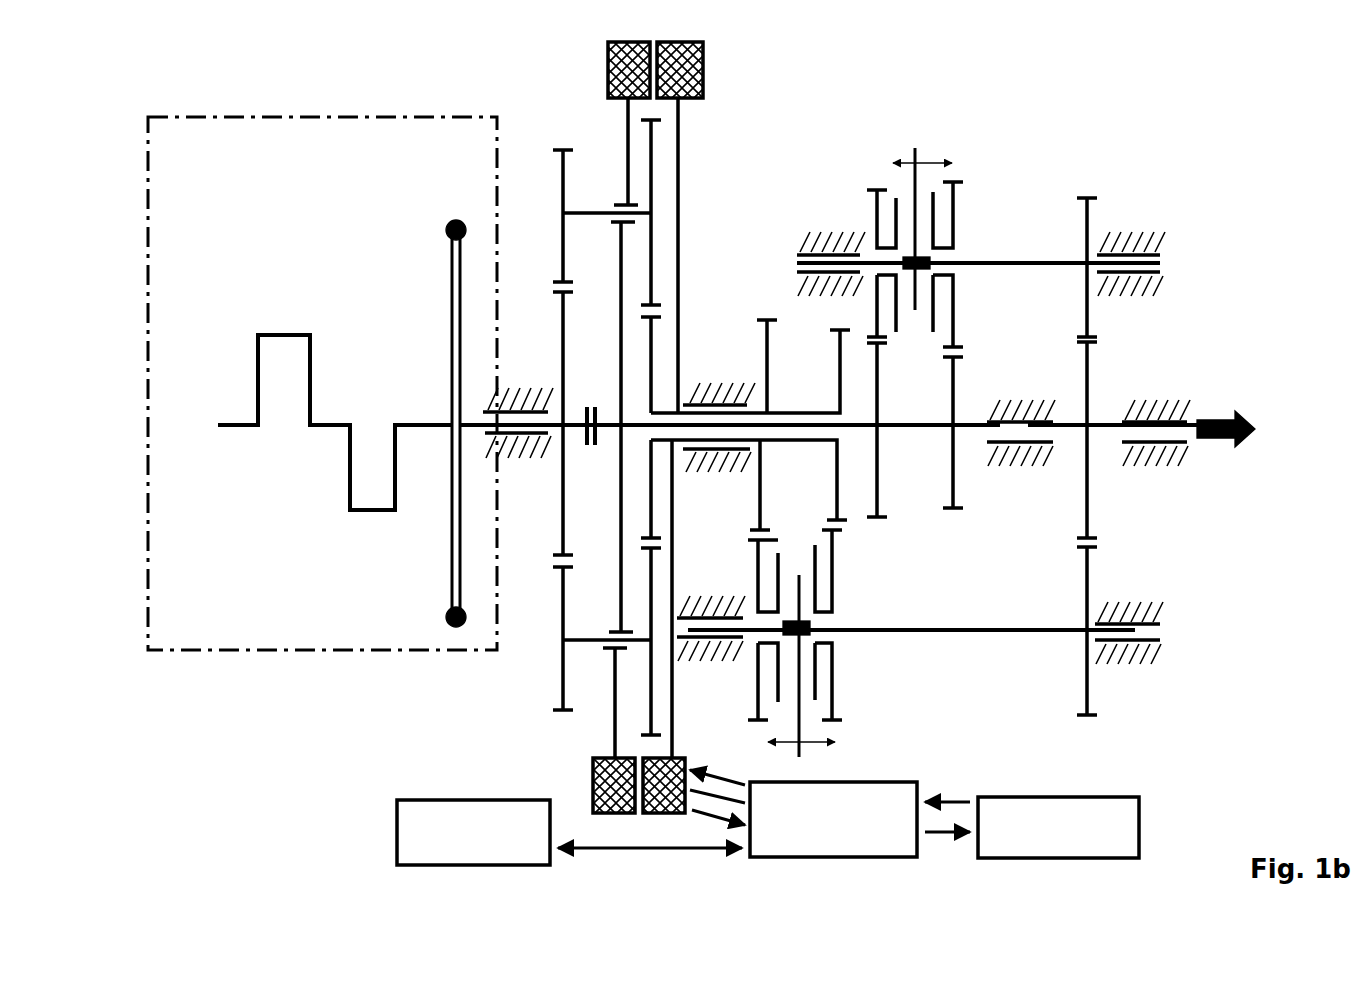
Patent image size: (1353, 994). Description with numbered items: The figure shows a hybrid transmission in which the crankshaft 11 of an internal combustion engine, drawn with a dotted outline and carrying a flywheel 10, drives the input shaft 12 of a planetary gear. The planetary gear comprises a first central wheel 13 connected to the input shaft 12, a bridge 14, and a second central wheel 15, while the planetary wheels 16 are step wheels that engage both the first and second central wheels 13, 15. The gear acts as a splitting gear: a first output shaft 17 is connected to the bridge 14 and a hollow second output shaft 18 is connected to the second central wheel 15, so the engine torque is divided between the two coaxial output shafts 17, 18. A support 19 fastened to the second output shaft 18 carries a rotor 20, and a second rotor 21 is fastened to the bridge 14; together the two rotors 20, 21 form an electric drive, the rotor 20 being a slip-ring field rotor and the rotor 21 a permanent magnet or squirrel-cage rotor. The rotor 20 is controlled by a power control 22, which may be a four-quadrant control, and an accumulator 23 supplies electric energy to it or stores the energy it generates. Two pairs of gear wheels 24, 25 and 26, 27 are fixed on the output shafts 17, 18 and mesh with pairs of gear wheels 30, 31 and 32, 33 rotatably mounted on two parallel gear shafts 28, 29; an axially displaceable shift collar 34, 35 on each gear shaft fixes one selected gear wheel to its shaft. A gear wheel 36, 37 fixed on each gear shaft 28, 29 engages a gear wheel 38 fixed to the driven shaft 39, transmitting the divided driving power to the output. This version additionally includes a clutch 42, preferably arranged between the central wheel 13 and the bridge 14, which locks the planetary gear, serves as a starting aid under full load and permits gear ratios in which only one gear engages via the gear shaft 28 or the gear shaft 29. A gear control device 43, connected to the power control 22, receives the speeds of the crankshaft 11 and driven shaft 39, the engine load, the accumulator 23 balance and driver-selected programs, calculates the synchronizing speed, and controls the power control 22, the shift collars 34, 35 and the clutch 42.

The flywheel 10 is at (445, 548).
The crankshaft 11 is at (345, 488).
The input shaft 12 is at (487, 410).
The first central wheel 13 is at (562, 475).
The bridge 14 is at (621, 355).
The second central wheel 15 is at (655, 350).
The planetary wheels 16 is at (565, 250).
The first output shaft 17 is at (790, 423).
The second output shaft 18 is at (786, 442).
The support 19 is at (680, 254).
The rotor 20 is at (692, 73).
The second rotor 21 is at (606, 73).
The power control 22 is at (833, 819).
The accumulator 23 is at (1032, 827).
The gear wheel 24 is at (880, 520).
The gear wheel 25 is at (952, 510).
The gear wheel 26 is at (763, 322).
The gear wheel 27 is at (840, 330).
The gear shaft 28 is at (1042, 262).
The gear shaft 29 is at (963, 628).
The gear wheel 30 is at (870, 212).
The gear wheel 31 is at (953, 220).
The gear wheel 32 is at (758, 705).
The gear wheel 33 is at (834, 694).
The shift collar 34 is at (930, 266).
The shift collar 35 is at (812, 633).
The gear wheel 36 is at (1097, 197).
The gear wheel 37 is at (1073, 707).
The gear wheel 38 is at (1090, 392).
The driven shaft 39 is at (1202, 418).
The clutch 42 is at (591, 460).
The gear control device 43 is at (569, 832).